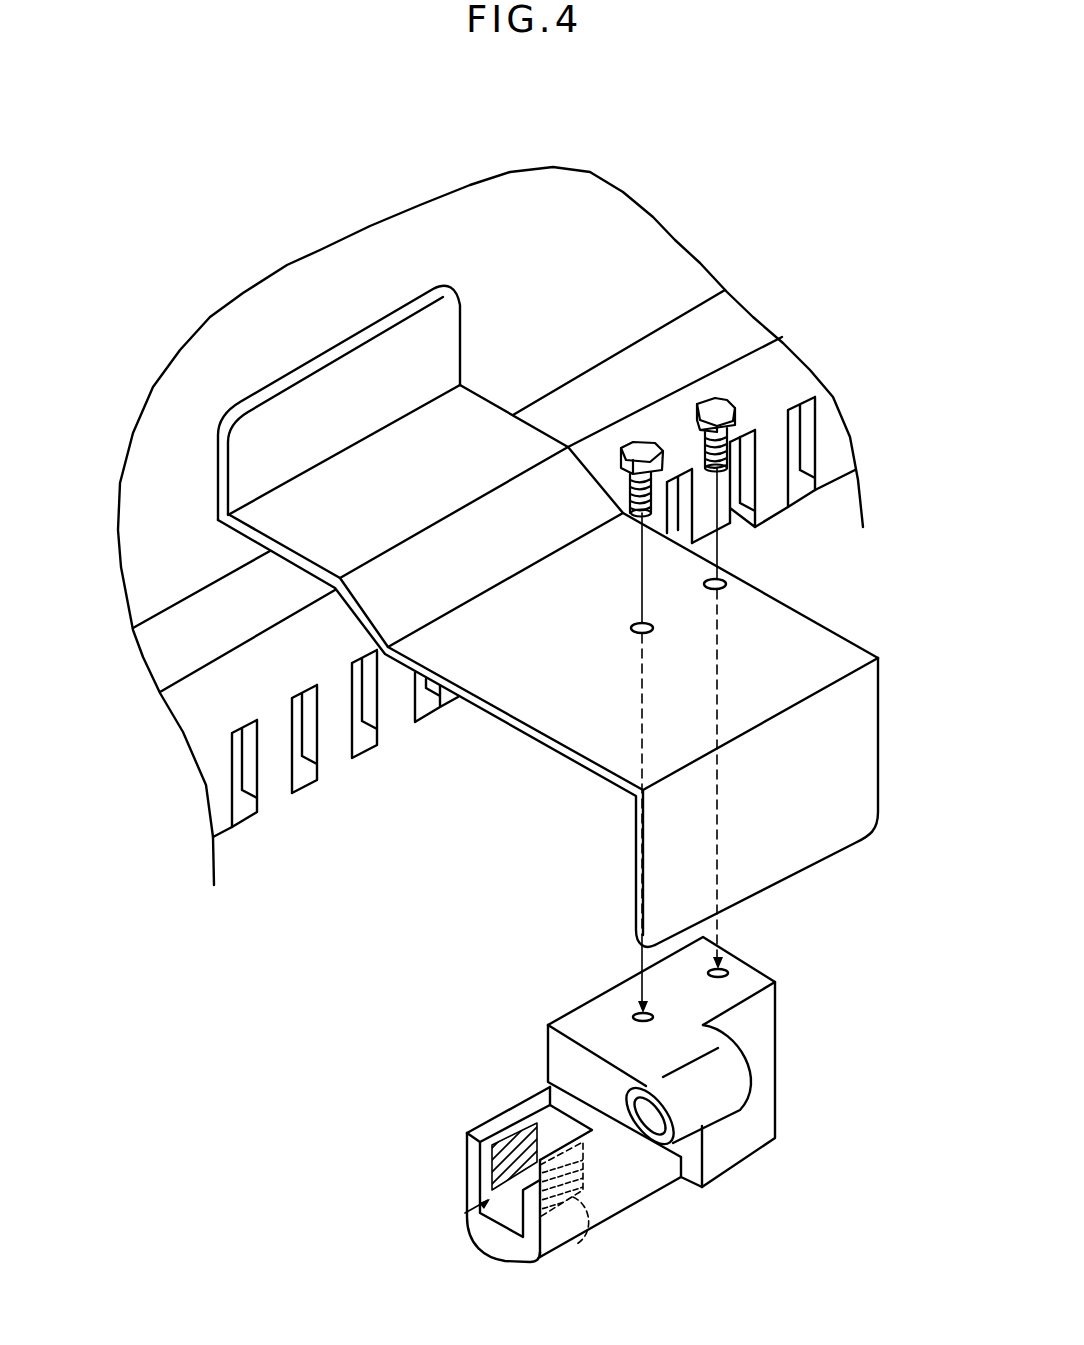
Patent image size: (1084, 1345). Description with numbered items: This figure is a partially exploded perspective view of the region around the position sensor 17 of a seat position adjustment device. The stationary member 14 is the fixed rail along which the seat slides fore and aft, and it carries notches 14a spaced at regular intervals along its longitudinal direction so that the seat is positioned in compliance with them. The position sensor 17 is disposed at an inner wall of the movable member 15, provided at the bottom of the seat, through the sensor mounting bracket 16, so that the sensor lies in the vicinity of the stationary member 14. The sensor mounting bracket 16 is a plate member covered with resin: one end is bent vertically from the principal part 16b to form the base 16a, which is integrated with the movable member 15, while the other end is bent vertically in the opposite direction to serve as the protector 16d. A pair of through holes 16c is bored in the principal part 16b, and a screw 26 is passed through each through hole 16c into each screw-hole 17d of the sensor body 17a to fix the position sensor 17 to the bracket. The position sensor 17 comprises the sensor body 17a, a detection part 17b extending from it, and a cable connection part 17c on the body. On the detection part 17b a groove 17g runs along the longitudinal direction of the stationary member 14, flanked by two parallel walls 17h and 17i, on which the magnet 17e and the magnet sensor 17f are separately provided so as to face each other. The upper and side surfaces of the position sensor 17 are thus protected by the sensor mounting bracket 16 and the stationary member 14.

The stationary member 14 is at (183, 643).
The notches 14a is at (368, 698).
The movable member 15 is at (528, 240).
The sensor mounting bracket 16 is at (576, 616).
The base 16a is at (418, 347).
The principal part 16b is at (579, 716).
The through holes 16c is at (632, 627).
The protector 16d is at (860, 738).
The position sensor 17 is at (623, 1102).
The sensor body 17a is at (757, 1050).
The detection part 17b is at (613, 1177).
The cable connection part 17c is at (710, 1093).
The screw-hole 17d is at (640, 1012).
The magnet 17e is at (487, 1123).
The magnet sensor 17f is at (580, 1247).
The groove 17g is at (470, 1215).
The wall 17h is at (468, 1133).
The wall 17i is at (540, 1195).
The screw 26 is at (712, 406).